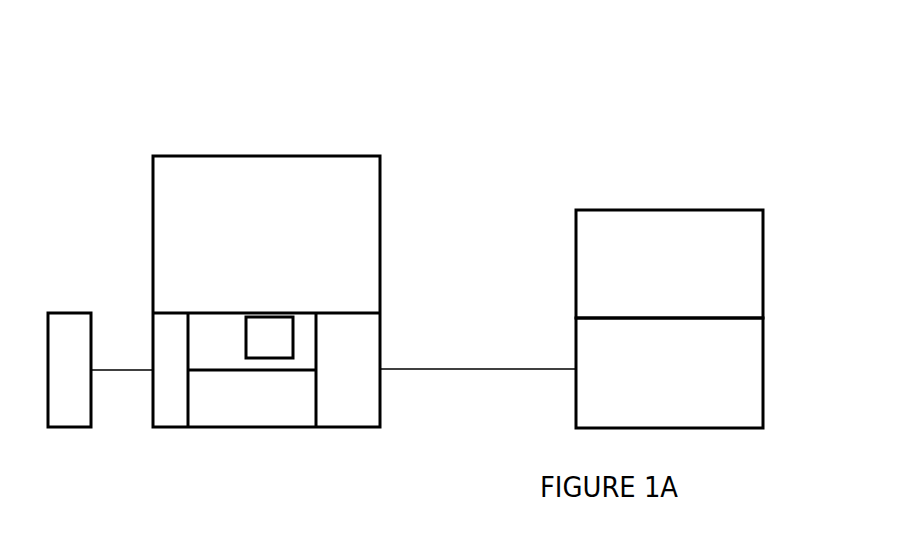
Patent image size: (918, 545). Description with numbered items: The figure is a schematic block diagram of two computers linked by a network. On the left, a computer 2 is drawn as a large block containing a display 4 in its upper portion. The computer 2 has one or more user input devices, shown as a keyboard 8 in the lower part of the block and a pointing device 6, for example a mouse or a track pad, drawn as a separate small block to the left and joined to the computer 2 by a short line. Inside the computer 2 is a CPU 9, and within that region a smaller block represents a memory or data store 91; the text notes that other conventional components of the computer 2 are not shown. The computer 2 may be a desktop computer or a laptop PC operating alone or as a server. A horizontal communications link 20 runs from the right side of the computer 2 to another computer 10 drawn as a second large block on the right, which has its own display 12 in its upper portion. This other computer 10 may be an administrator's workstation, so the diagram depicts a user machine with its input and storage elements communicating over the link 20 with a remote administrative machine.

The computer 2 is at (363, 430).
The display 4 is at (287, 217).
The pointing device 6 is at (72, 407).
The keyboard 8 is at (247, 398).
The CPU 9 is at (235, 332).
The memory or data store 91 is at (262, 340).
The another computer 10 is at (768, 387).
The display 12 is at (733, 207).
The communications link 20 is at (452, 358).